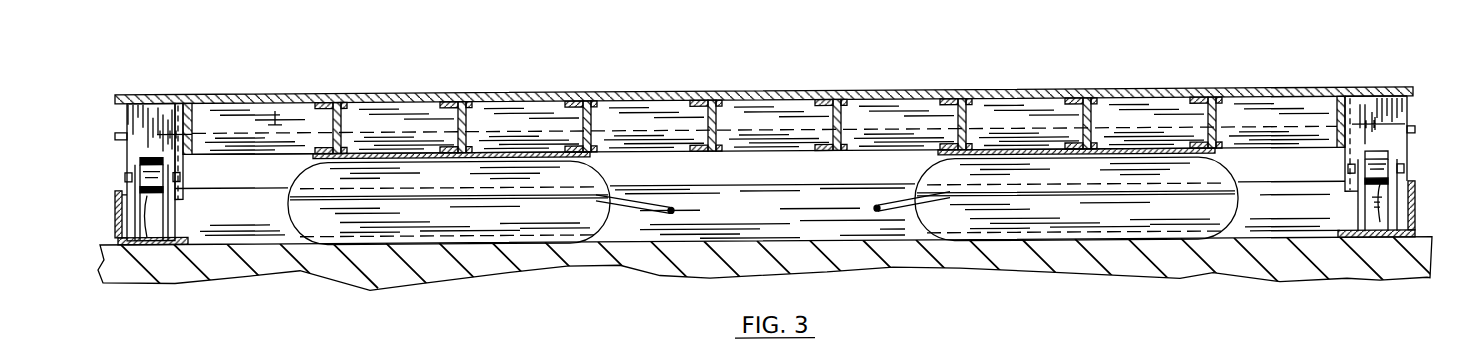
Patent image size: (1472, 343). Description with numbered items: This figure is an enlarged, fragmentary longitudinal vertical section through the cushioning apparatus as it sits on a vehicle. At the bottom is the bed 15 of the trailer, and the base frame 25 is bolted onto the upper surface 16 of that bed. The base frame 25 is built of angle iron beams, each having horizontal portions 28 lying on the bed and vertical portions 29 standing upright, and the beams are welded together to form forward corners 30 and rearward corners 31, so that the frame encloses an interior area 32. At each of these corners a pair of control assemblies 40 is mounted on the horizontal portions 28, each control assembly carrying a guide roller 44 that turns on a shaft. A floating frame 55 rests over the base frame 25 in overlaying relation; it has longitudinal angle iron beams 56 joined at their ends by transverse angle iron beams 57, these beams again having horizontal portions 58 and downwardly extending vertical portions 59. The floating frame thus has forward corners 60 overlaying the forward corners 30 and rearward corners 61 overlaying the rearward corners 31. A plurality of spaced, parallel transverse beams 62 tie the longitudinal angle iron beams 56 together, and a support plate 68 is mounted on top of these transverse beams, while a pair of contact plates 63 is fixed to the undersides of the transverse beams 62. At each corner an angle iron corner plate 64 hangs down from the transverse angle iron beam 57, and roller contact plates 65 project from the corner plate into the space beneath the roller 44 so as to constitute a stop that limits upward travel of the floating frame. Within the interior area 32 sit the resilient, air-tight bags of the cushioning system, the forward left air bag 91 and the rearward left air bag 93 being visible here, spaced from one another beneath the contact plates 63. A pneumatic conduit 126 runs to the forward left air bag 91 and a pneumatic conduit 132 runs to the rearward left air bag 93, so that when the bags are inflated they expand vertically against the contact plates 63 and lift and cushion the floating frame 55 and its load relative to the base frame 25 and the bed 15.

The bed 15 is at (1406, 272).
The upper surface 16 is at (1255, 244).
The base frame 25 is at (116, 216).
The horizontal portions 28 is at (173, 265).
The vertical portions 29 is at (115, 194).
The forward corners 30 is at (1416, 236).
The rearward corners 31 is at (118, 241).
The interior area 32 is at (768, 203).
The control assemblies 40 is at (180, 212).
The roller 44 is at (140, 162).
The floating frame 55 is at (262, 90).
The longitudinal angle iron beams 56 is at (372, 105).
The transverse angle iron beams 57 is at (150, 95).
The horizontal portions 58 is at (179, 98).
The vertical portions 59 is at (190, 122).
The forward corners 60 is at (1412, 112).
The rearward corners 61 is at (116, 137).
The transverse beams 62 is at (445, 121).
The contact plates 63 is at (605, 186).
The angle iron corner plate 64 is at (130, 120).
The roller contact plates 65 is at (150, 235).
The support plate 68 is at (840, 95).
The forward left air bag 91 is at (1010, 168).
The rearward left air bag 93 is at (470, 172).
The pneumatic conduit 126 is at (879, 217).
The pneumatic conduit 132 is at (646, 212).